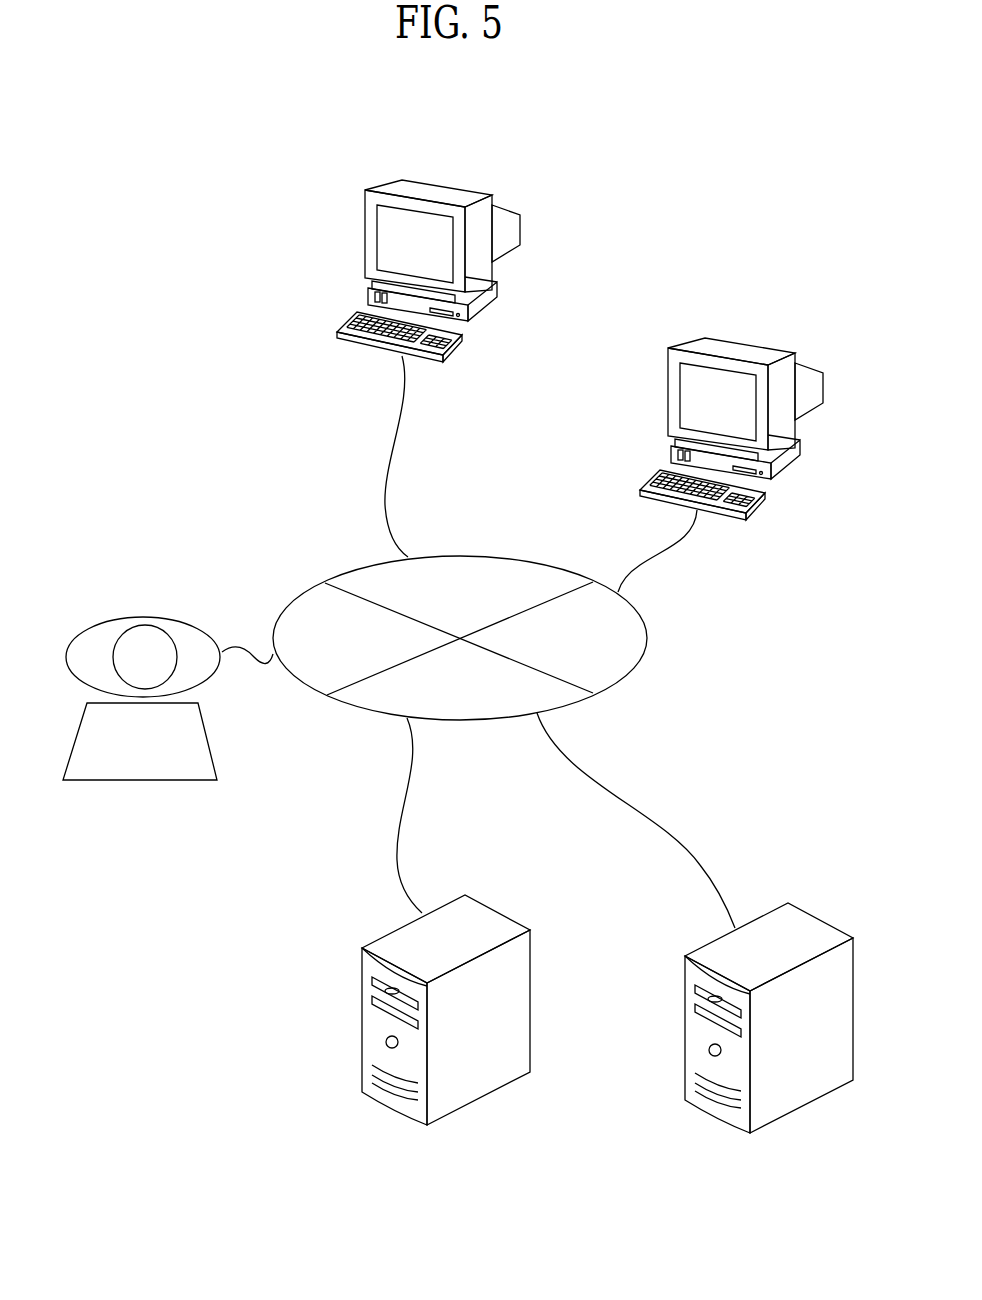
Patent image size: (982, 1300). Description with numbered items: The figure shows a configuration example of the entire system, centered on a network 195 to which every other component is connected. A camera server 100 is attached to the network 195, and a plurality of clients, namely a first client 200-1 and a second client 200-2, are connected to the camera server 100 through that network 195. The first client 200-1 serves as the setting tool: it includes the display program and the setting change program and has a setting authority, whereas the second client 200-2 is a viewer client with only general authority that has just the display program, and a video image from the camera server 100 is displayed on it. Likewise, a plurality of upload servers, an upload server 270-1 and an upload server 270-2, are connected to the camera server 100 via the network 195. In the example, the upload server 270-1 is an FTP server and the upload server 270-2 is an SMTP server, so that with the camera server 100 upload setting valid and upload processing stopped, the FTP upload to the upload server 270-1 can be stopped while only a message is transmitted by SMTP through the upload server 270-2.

The camera server 100 is at (147, 614).
The network 195 is at (490, 556).
The first client 200-1 is at (432, 188).
The second client 200-2 is at (748, 347).
The upload server 270-1 is at (531, 948).
The upload server 270-2 is at (758, 917).